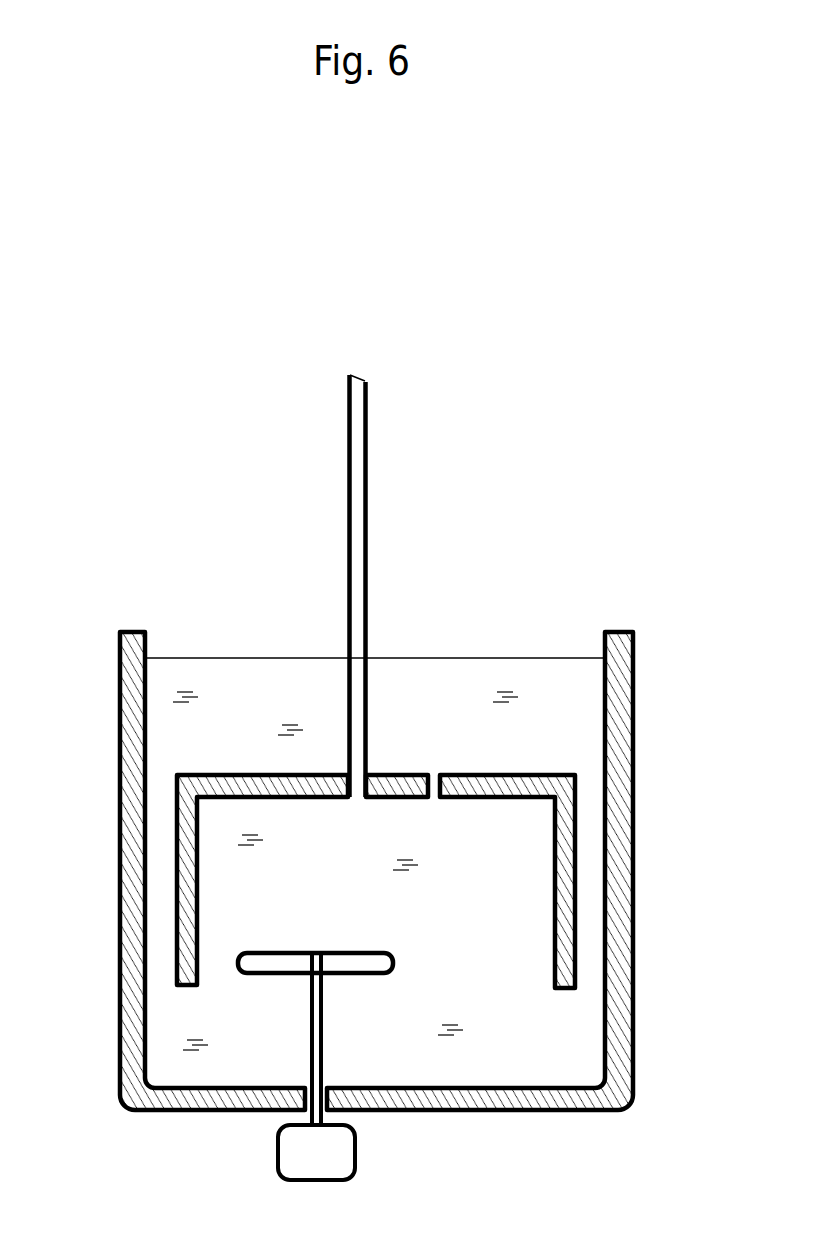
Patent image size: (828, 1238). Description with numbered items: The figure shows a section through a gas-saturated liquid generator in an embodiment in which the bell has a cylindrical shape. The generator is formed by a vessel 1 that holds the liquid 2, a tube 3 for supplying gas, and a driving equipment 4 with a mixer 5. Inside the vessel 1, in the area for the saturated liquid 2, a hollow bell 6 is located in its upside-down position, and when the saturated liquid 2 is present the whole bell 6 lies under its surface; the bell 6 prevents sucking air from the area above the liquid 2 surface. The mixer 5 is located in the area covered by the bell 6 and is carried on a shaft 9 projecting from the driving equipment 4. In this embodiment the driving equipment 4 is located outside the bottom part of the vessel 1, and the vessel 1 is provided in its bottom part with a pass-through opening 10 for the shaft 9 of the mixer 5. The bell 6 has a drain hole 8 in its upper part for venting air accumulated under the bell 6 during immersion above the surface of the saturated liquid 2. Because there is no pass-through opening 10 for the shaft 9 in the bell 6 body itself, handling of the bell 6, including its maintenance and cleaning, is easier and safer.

The vessel 1 is at (633, 708).
The liquid 2 is at (562, 1040).
The tube 3 is at (352, 436).
The driving equipment 4 is at (343, 1157).
The mixer 5 is at (267, 963).
The bell 6 is at (577, 892).
The drain hole 8 is at (433, 785).
The shaft 9 is at (303, 1048).
The pass-through opening 10 is at (327, 1082).